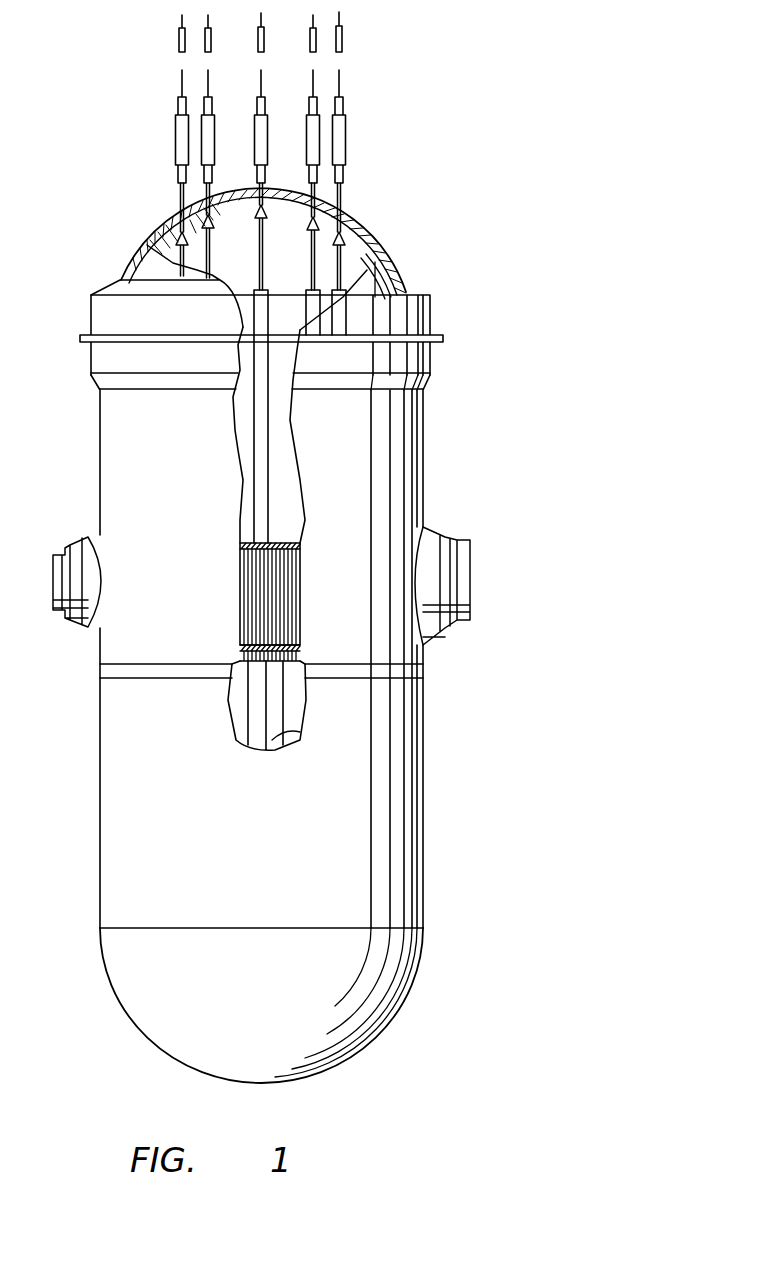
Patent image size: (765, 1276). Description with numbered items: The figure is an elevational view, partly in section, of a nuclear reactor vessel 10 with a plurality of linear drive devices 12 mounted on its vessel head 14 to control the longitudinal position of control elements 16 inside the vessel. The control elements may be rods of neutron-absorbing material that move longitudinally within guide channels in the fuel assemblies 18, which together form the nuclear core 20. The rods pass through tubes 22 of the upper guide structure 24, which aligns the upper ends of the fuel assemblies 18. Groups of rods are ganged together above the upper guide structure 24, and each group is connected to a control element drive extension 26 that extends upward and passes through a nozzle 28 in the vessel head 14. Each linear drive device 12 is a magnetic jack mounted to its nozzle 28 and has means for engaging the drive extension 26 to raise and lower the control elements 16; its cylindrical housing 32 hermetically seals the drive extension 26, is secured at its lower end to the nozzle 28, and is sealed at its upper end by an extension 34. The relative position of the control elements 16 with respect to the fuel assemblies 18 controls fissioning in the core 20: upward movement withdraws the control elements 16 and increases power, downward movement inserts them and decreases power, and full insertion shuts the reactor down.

The nuclear reactor vessel 10 is at (294, 547).
The linear drive device 12 is at (257, 97).
The vessel head 14 is at (430, 318).
The control element 16 is at (265, 283).
The fuel assembly 18 is at (291, 722).
The nuclear core 20 is at (242, 715).
The tube 22 is at (250, 560).
The upper guide structure 24 is at (290, 543).
The control element drive extension 26 is at (211, 242).
The nozzle 28 is at (178, 208).
The housing 32 is at (347, 125).
The extension 34 is at (341, 42).